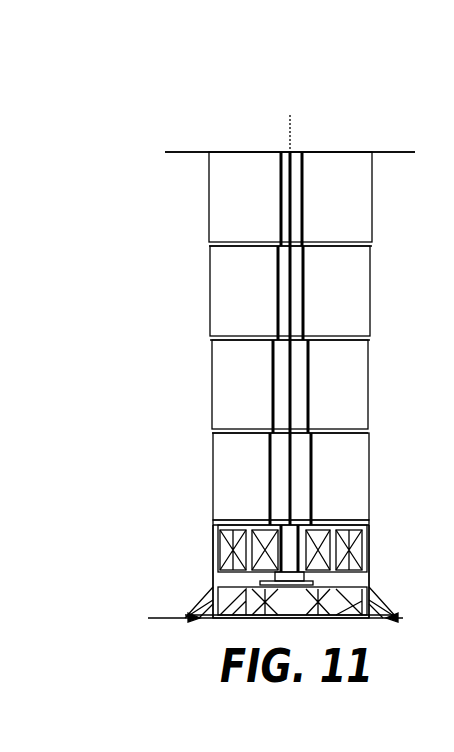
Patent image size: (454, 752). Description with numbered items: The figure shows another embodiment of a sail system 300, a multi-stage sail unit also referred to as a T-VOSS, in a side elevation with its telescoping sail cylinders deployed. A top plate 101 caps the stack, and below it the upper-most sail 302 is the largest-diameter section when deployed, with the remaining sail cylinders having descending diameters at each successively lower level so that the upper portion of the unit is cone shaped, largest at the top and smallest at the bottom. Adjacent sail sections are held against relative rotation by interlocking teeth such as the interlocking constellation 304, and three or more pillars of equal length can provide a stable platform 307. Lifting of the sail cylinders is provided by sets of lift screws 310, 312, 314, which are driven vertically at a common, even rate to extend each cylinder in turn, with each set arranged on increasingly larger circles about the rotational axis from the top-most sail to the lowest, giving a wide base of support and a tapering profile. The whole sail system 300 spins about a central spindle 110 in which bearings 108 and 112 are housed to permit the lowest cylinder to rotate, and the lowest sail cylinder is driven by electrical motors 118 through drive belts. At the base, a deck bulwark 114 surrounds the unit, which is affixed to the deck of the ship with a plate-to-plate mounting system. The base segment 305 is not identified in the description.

The sail system 300 is at (368, 108).
The top plate 101 is at (266, 110).
The upper-most sail 302 is at (218, 185).
The stable platform 307 is at (251, 282).
The interlocking constellation 304 is at (230, 386).
The base segment 305 is at (222, 542).
The lift screws 310 is at (302, 168).
The lift screws 312 is at (290, 193).
The lift screws 314 is at (281, 222).
The bearing 108 is at (357, 512).
The central spindle 110 is at (268, 538).
The bearing 112 is at (329, 528).
The deck bulwark 114 is at (232, 571).
The electrical motors 118 is at (313, 595).